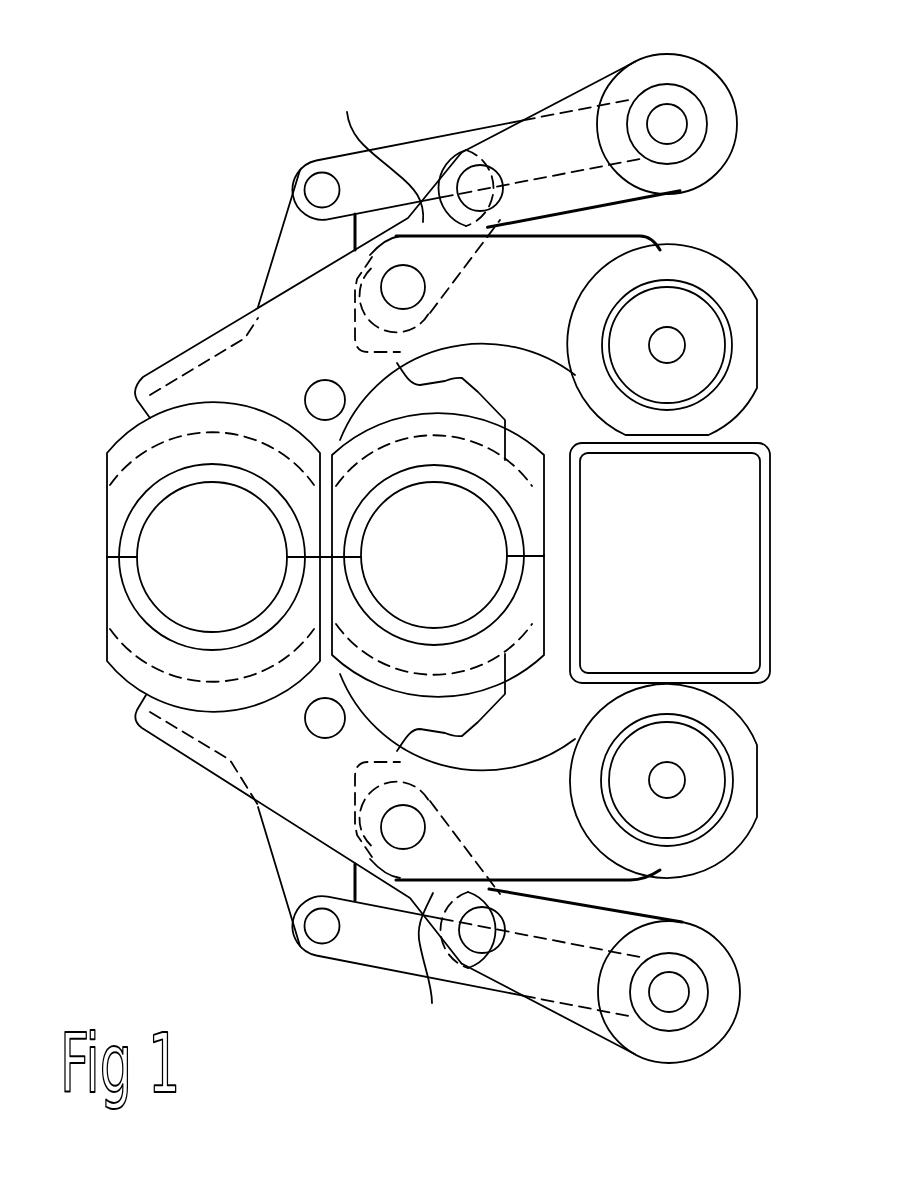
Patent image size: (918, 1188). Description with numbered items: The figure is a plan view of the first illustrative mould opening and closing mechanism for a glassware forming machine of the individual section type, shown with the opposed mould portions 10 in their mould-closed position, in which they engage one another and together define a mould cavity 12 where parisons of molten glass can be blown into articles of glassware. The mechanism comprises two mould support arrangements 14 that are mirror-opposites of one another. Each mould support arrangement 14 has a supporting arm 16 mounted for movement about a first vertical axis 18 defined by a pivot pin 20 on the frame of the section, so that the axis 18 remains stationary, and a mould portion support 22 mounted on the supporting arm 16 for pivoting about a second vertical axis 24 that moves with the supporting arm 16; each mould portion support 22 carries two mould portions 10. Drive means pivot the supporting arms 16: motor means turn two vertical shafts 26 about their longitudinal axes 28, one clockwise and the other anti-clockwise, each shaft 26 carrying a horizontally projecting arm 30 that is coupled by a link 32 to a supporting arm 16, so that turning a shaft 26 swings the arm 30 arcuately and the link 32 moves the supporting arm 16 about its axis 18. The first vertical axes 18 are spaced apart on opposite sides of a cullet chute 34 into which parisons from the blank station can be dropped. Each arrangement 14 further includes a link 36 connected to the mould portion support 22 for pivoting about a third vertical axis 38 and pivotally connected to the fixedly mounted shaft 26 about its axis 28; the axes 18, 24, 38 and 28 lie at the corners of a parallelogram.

The mould portions 10 is at (123, 505).
The mould cavity 12 is at (153, 510).
The mould support arrangement 14 is at (228, 294).
The supporting arm 16 is at (590, 255).
The first vertical axis 18 is at (672, 344).
The pivot pin 20 is at (675, 351).
The mould portion support 22 is at (300, 238).
The second vertical axis 24 is at (325, 400).
The vertical shaft 26 is at (664, 110).
The longitudinal axis 28 is at (672, 128).
The arm 30 is at (560, 123).
The link 32 is at (393, 560).
The cullet chute 34 is at (767, 506).
The link 36 is at (440, 150).
The third vertical axis 38 is at (322, 190).